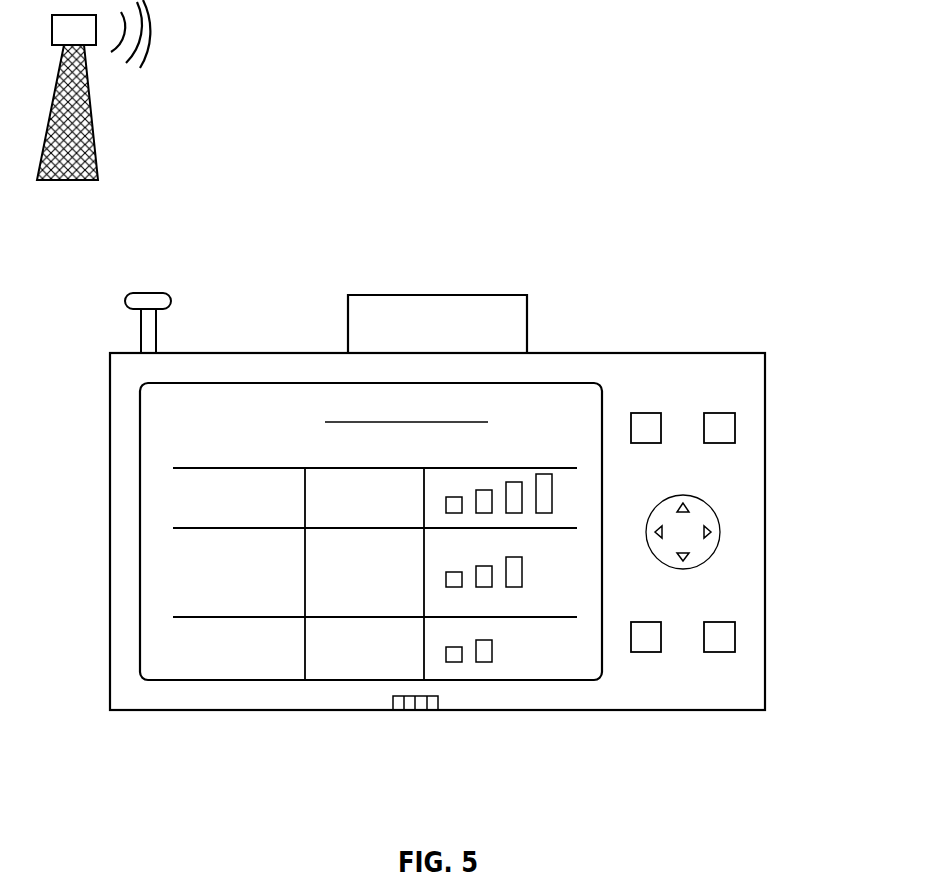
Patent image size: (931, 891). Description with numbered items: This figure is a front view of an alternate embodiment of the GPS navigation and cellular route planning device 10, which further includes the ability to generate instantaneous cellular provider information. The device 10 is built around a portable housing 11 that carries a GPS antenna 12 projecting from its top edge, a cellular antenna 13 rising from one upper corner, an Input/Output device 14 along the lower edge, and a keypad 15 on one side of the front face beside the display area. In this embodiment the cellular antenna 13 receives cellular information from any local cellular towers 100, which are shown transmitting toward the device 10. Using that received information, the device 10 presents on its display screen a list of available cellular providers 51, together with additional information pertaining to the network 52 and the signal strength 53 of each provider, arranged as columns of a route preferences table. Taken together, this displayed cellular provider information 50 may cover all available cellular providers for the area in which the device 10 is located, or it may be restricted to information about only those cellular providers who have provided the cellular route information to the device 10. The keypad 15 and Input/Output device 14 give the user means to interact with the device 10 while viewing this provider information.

The local cellular tower 100 is at (82, 180).
The GPS navigation and cellular route planning device 10 is at (425, 180).
The portable housing 11 is at (682, 353).
The GPS antenna 12 is at (372, 295).
The cellular antenna 13 is at (140, 330).
The Input/Output device 14 is at (417, 710).
The keypad 15 is at (778, 650).
The cellular provider information 50 is at (322, 476).
The list of available cellular providers 51 is at (207, 453).
The network 52 is at (327, 452).
The signal strength 53 is at (556, 445).